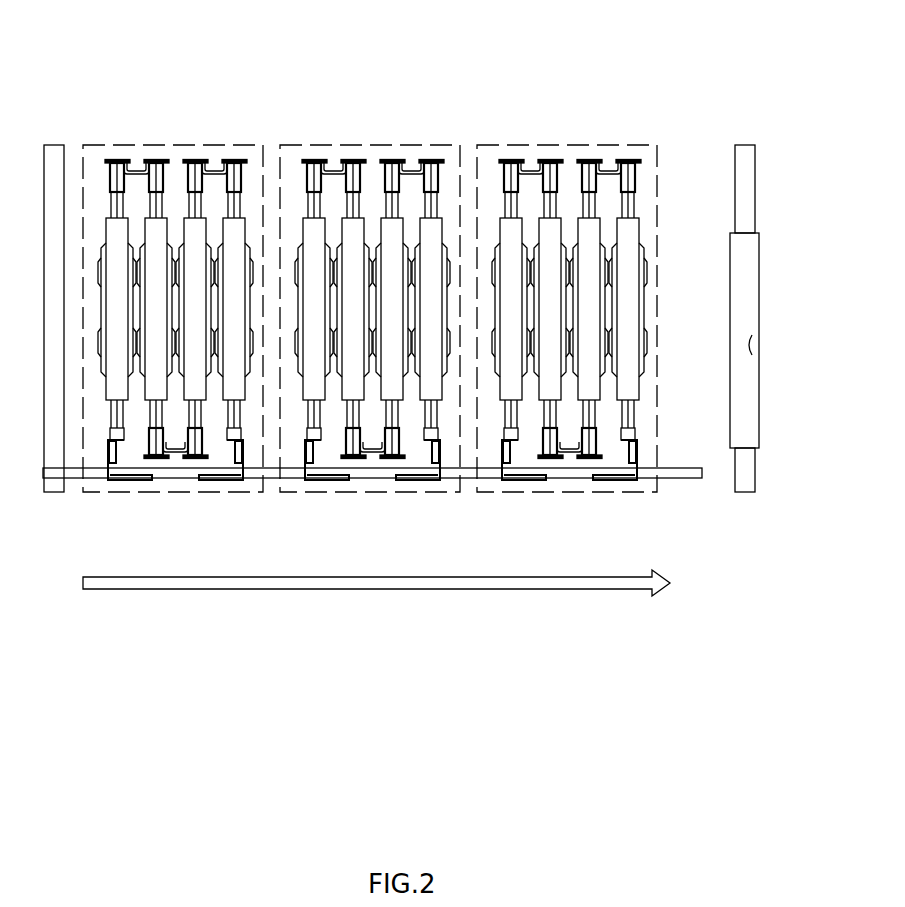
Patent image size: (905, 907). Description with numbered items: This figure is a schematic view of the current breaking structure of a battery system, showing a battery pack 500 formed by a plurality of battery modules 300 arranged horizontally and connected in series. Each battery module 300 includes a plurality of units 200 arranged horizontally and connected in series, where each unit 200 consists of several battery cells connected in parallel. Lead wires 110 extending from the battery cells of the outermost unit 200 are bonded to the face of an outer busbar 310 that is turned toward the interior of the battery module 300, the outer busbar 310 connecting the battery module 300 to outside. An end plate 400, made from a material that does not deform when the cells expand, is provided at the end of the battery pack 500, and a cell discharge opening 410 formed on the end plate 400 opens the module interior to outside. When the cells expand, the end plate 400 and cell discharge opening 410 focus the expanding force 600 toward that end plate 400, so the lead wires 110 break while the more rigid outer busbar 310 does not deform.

The battery pack 500 is at (441, 330).
The battery module 300 is at (156, 329).
The unit 200 is at (112, 383).
The lead wire 110 is at (128, 437).
The outer busbar 310 is at (108, 457).
The end plate 400 is at (783, 295).
The cell discharge opening 410 is at (752, 343).
The expanding force 600 is at (466, 583).